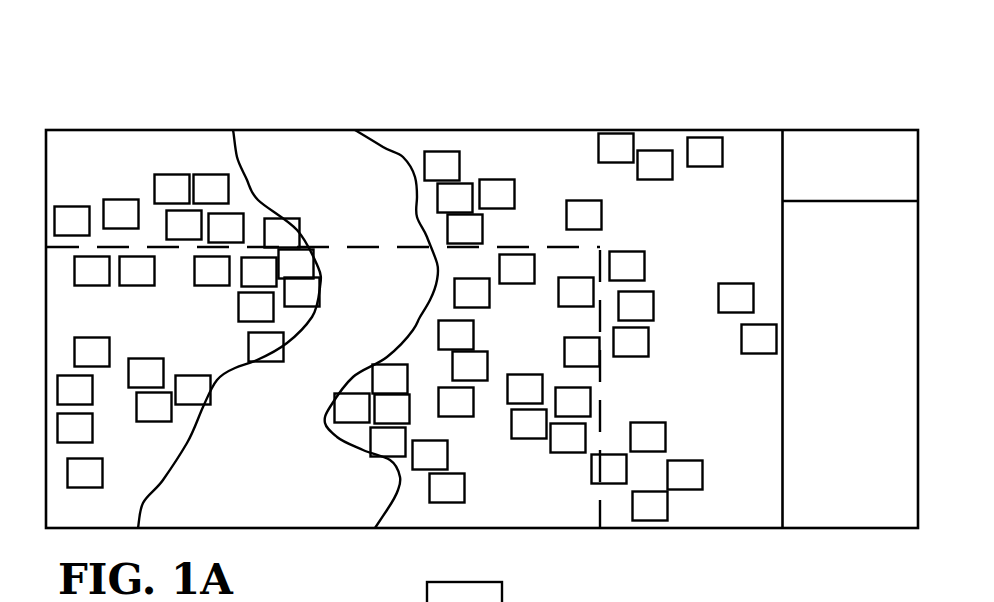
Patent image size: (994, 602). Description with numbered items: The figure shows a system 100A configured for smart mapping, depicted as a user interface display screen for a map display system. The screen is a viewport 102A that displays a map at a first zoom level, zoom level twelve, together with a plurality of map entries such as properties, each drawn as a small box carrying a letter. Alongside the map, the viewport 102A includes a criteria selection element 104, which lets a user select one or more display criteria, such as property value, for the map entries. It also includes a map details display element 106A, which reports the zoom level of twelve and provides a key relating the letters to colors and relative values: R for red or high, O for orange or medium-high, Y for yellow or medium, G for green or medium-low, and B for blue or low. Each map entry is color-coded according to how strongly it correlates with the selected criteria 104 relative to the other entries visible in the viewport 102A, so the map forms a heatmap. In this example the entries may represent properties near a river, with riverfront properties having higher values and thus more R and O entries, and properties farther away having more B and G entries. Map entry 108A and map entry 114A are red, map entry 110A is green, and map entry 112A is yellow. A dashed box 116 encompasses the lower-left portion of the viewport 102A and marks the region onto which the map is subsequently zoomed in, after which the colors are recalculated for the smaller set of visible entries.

The system 100A is at (113, 13).
The viewport 102A is at (110, 129).
The criteria selection element 104 is at (851, 172).
The map details display element 106A is at (830, 540).
The map entry 108A is at (250, 340).
The map entry 110A is at (88, 458).
The map entry 112A is at (587, 337).
The map entry 114A is at (465, 490).
The box 116 is at (600, 247).